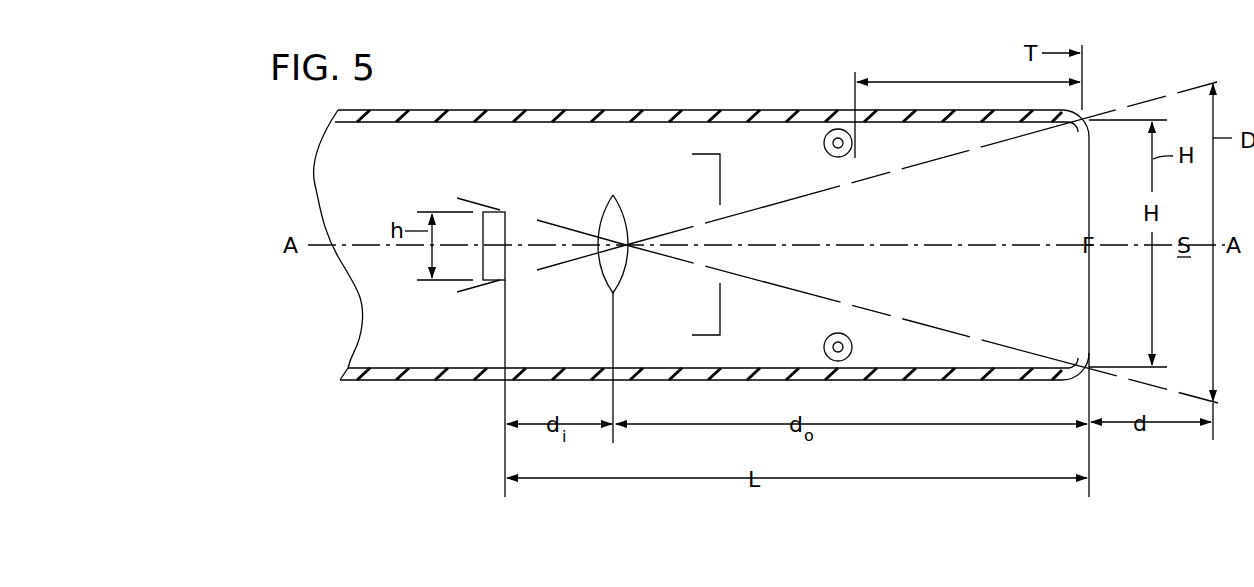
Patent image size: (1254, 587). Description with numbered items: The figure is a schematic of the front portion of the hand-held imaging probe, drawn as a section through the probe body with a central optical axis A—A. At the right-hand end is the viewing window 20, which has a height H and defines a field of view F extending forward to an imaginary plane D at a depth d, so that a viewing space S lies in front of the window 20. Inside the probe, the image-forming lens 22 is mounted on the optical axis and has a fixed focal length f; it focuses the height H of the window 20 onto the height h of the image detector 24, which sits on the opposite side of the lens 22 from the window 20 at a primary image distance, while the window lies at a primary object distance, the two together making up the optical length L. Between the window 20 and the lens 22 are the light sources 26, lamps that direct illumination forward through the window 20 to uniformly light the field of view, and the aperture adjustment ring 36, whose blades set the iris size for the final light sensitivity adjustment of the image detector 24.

The viewing window 20 is at (1073, 126).
The image-forming lens 22 is at (624, 214).
The image detector 24 is at (490, 212).
The light source 26 is at (823, 146).
The aperture adjustment ring 36 is at (703, 153).